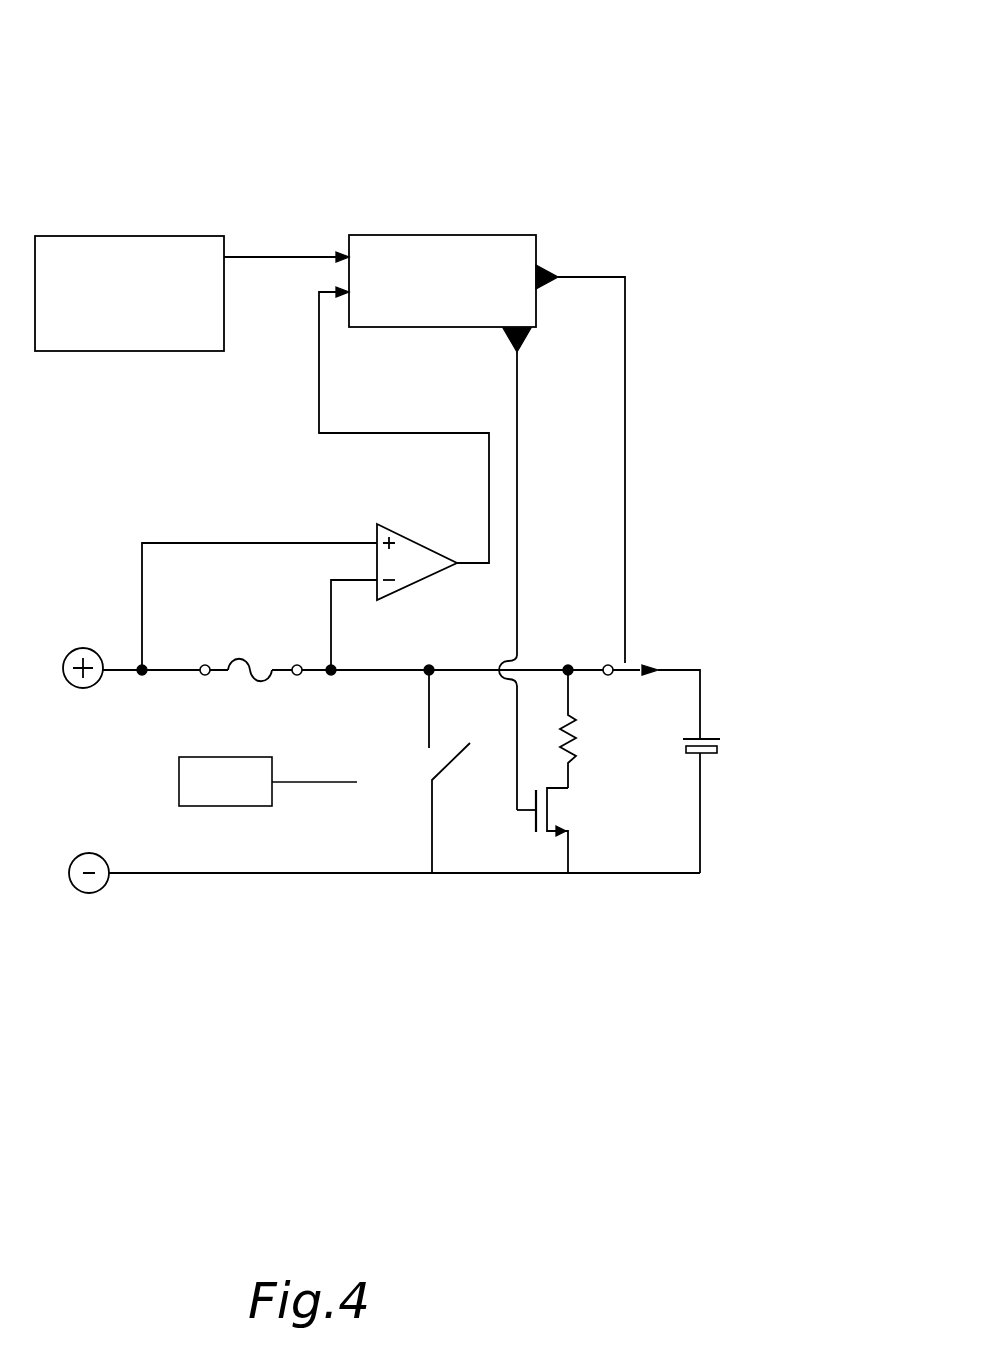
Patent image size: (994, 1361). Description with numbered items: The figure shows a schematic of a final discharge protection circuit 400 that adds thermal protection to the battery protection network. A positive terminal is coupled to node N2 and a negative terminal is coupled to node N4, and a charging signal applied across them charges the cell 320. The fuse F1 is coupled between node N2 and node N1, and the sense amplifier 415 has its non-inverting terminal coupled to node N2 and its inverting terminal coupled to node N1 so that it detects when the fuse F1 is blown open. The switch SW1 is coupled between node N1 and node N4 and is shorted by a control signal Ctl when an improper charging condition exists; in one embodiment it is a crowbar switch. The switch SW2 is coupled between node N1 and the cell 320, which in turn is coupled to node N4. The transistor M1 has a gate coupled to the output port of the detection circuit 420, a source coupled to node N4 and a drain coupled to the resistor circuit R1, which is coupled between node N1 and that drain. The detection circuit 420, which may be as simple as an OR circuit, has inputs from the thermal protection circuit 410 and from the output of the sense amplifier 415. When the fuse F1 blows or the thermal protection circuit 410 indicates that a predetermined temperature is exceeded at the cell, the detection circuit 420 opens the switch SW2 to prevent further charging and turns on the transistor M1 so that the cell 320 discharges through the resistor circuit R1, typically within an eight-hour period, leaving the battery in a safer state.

The final discharge protection circuit 400 is at (589, 68).
The thermal protection circuit 410 is at (122, 230).
The sense amplifier 415 is at (395, 524).
The detection circuit 420 is at (441, 230).
The cell 320 is at (716, 724).
The node N1 is at (382, 676).
The node N2 is at (142, 616).
The node N4 is at (289, 874).
The fuse F1 is at (251, 690).
The resistor circuit R1 is at (590, 726).
The transistor M1 is at (556, 824).
The switch SW1 is at (420, 769).
The switch SW2 is at (633, 686).
The control signal Ctl is at (268, 781).